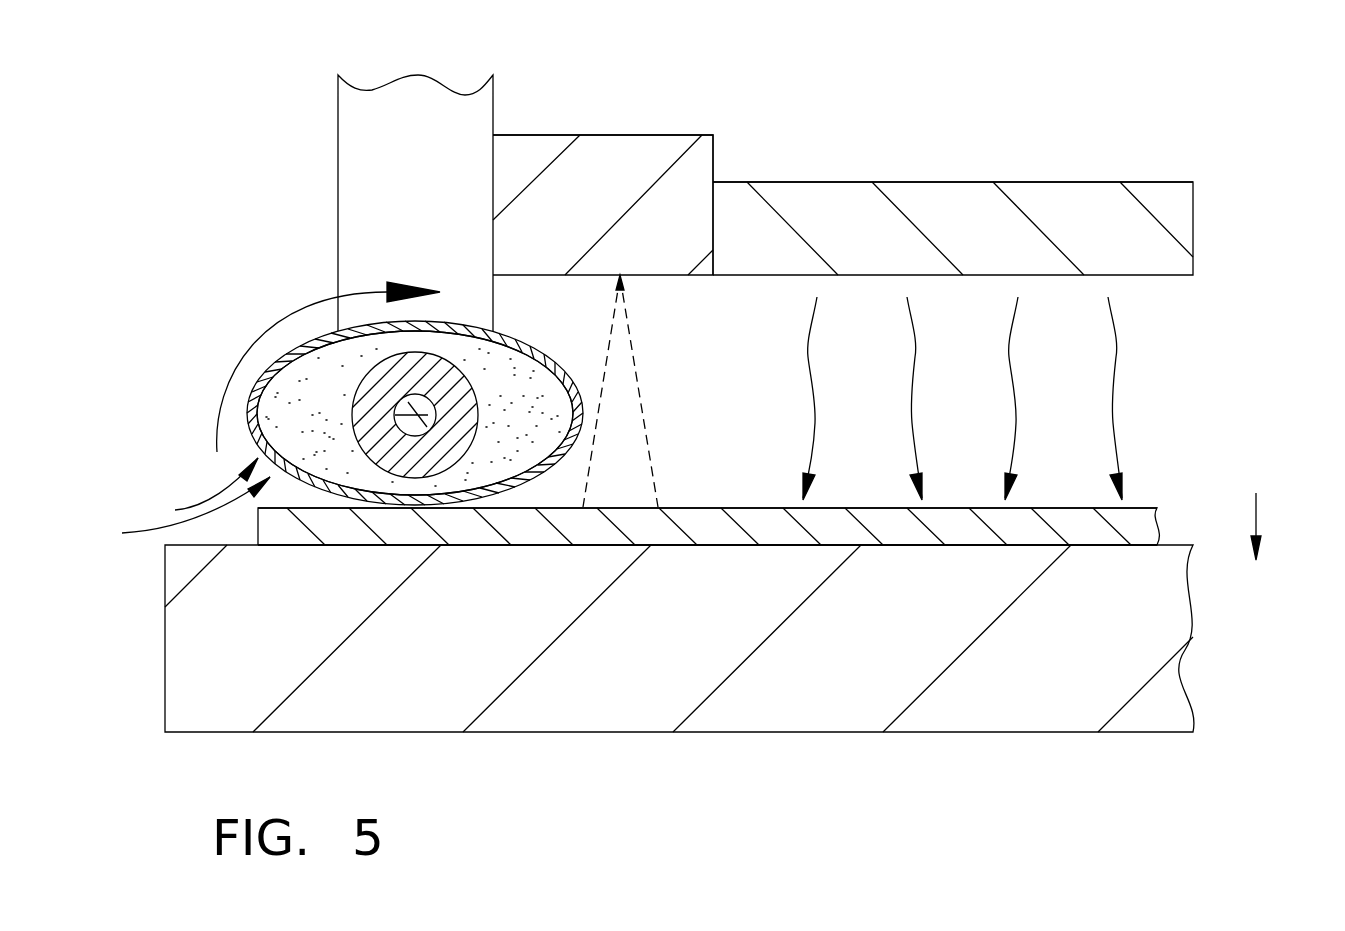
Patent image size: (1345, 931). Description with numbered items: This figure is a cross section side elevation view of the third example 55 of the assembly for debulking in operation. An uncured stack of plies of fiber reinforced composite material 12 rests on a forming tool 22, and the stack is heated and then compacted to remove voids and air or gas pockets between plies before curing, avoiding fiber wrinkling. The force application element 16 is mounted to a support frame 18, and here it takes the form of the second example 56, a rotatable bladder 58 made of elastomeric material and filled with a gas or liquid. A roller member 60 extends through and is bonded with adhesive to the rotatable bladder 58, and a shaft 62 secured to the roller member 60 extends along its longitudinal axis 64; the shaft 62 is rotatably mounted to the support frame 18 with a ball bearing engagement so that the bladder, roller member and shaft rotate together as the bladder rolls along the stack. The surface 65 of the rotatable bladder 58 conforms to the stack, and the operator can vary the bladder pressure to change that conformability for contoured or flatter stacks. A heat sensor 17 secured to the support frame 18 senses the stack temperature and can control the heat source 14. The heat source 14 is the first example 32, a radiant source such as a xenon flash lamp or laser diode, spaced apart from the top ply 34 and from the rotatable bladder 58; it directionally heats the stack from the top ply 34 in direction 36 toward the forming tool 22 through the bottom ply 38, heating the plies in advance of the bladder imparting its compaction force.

The uncured stack of plies of fiber reinforced composite material 12 is at (1132, 527).
The heat source 14 is at (1085, 225).
The force application element 16 is at (502, 500).
The heat sensor 17 is at (680, 170).
The support frame 18 is at (375, 142).
The forming tool 22 is at (1025, 688).
The first example of heat source 32 is at (958, 182).
The top ply 34 is at (1138, 507).
The direction 36 is at (1258, 513).
The bottom ply 38 is at (965, 548).
The third example of assembly for debulking 55 is at (790, 70).
The second example of force application element 56 is at (200, 492).
The rotatable bladder 58 is at (177, 512).
The roller member 60 is at (517, 443).
The shaft 62 is at (430, 426).
The longitudinal axis 64 is at (418, 433).
The surface 65 is at (453, 327).